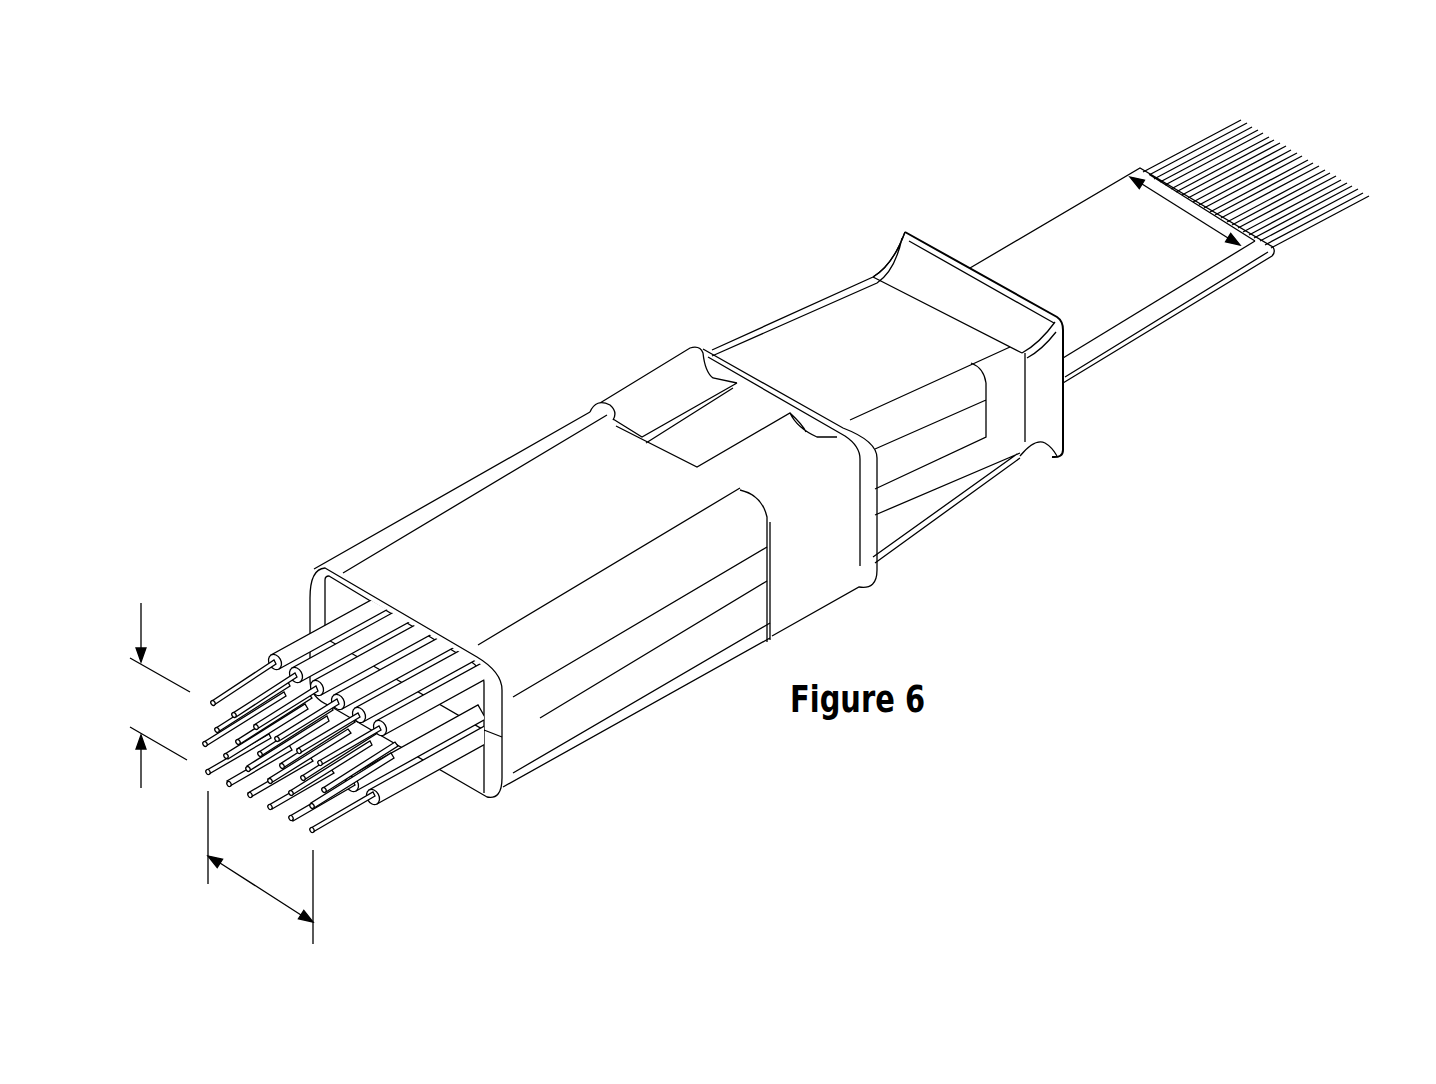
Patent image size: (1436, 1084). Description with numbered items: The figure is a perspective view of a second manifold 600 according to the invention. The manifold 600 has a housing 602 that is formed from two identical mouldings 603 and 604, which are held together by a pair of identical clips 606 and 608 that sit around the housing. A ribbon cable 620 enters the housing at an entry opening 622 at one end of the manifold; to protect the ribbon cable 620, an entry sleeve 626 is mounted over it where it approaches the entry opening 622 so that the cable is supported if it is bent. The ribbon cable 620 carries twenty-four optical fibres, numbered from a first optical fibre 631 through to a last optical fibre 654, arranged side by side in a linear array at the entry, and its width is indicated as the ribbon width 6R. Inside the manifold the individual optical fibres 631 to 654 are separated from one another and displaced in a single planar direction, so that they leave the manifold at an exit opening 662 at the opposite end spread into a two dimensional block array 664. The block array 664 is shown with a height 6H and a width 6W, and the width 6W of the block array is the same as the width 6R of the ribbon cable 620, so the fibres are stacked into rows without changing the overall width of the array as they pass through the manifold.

The second manifold 600 is at (442, 349).
The housing 602 is at (791, 281).
The moulding 603 is at (468, 508).
The moulding 604 is at (594, 712).
The clip 606 is at (648, 373).
The clip 608 is at (816, 614).
The ribbon cable 620 is at (1290, 240).
The entry opening 622 is at (960, 223).
The entry sleeve 626 is at (1110, 308).
The optical fibre 631 is at (202, 740).
The optical fibre 654 is at (390, 778).
The exit opening 662 is at (287, 584).
The two dimensional block array 664 is at (165, 858).
The height 6H is at (158, 681).
The width 6W is at (272, 900).
The width of the ribbon cable 6R is at (1185, 211).